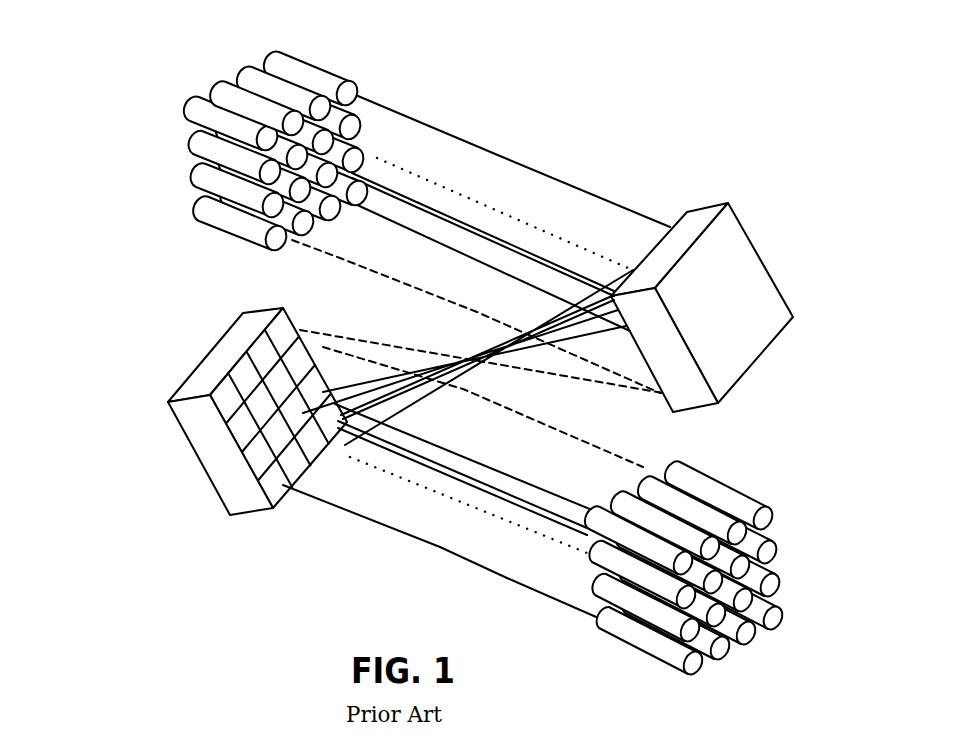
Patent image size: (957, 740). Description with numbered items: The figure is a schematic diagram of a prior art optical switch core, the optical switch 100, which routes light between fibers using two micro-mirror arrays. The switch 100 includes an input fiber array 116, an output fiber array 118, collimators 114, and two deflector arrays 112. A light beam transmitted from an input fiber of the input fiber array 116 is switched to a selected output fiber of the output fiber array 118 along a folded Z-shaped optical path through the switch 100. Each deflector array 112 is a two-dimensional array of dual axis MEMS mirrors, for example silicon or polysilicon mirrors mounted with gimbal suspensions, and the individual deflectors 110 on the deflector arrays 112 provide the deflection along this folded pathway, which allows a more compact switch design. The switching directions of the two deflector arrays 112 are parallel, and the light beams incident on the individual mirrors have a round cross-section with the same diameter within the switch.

The optical switch 100 is at (867, 158).
The deflector 110 is at (284, 310).
The deflector array 112 is at (205, 372).
The collimator 114 is at (290, 105).
The input fiber array 116 is at (208, 108).
The output fiber array 118 is at (745, 495).